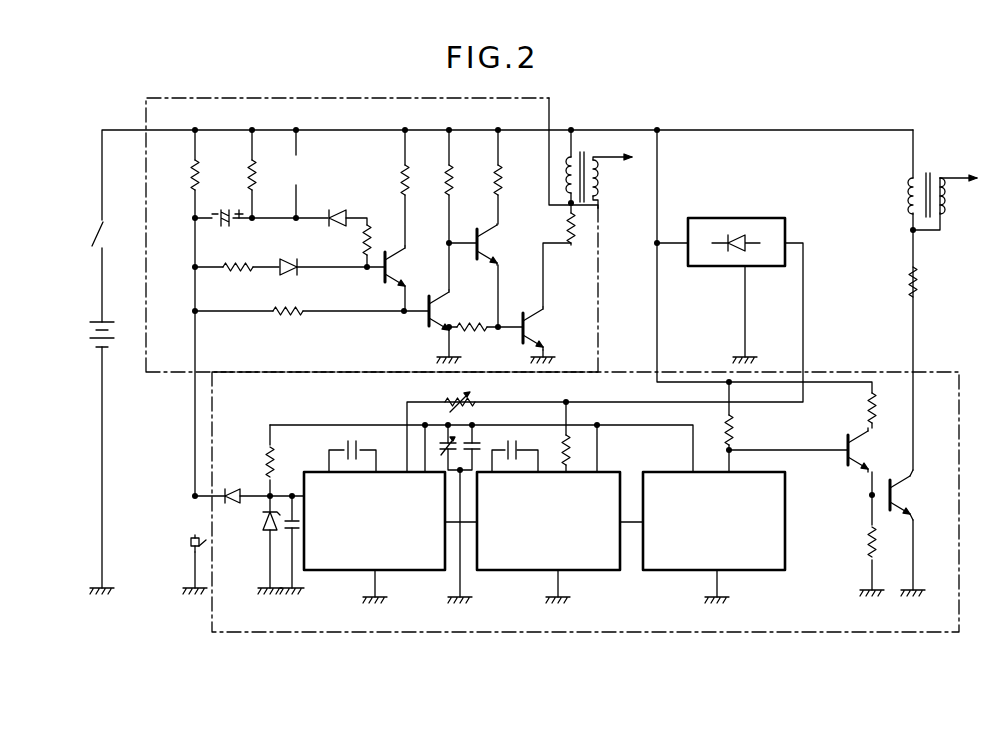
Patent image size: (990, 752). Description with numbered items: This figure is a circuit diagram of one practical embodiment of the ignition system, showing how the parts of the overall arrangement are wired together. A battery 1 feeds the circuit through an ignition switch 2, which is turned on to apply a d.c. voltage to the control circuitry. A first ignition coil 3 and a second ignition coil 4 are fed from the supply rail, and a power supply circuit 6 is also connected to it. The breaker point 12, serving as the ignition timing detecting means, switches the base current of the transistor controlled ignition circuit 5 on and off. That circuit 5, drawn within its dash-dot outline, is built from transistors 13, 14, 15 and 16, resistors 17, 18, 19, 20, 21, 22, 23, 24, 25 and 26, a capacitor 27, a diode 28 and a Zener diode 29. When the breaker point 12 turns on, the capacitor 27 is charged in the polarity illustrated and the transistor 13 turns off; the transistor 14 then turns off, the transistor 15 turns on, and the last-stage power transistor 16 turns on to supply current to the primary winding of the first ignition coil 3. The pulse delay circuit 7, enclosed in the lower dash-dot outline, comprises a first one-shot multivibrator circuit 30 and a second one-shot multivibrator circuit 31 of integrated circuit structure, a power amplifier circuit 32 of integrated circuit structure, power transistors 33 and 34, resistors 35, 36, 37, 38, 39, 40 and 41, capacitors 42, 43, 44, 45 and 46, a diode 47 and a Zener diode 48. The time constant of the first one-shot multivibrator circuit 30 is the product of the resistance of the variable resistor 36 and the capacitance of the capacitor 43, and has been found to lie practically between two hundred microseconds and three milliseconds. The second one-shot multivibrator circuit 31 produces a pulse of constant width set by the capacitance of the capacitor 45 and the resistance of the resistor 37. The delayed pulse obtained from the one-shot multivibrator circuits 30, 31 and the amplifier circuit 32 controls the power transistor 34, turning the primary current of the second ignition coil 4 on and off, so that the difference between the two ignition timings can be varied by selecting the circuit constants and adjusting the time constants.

The battery 1 is at (90, 332).
The ignition switch 2 is at (96, 232).
The first ignition coil 3 is at (585, 160).
The second ignition coil 4 is at (929, 172).
The transistor controlled ignition circuit 5 is at (390, 98).
The power supply circuit 6 is at (752, 218).
The pulse delay circuit 7 is at (720, 633).
The breaker point 12 is at (189, 542).
The transistor 13 is at (396, 272).
The transistor 14 is at (440, 311).
The transistor 15 is at (490, 248).
The power transistor 16 is at (534, 334).
The resistor 17 is at (190, 177).
The resistor 18 is at (248, 177).
The resistor 19 is at (382, 240).
The resistor 20 is at (238, 284).
The resistor 21 is at (282, 318).
The resistor 22 is at (422, 190).
The resistor 23 is at (462, 174).
The resistor 24 is at (512, 174).
The resistor 25 is at (470, 333).
The resistor 26 is at (578, 228).
The capacitor 27 is at (225, 226).
The diode 28 is at (292, 253).
The Zener diode 29 is at (332, 227).
The first one-shot multivibrator circuit 30 is at (394, 576).
The second one-shot multivibrator circuit 31 is at (537, 576).
The power amplifier circuit 32 is at (700, 576).
The power transistor 33 is at (862, 454).
The power transistor 34 is at (906, 499).
The resistor 35 is at (263, 474).
The variable resistor 36 is at (478, 398).
The resistor 37 is at (573, 450).
The resistor 38 is at (756, 445).
The resistor 39 is at (865, 411).
The resistor 40 is at (865, 545).
The resistor 41 is at (906, 292).
The capacitor 42 is at (290, 530).
The capacitor 43 is at (353, 436).
The capacitor 44 is at (478, 440).
The capacitor 45 is at (523, 436).
The capacitor 46 is at (438, 446).
The diode 47 is at (234, 503).
The Zener diode 48 is at (266, 534).